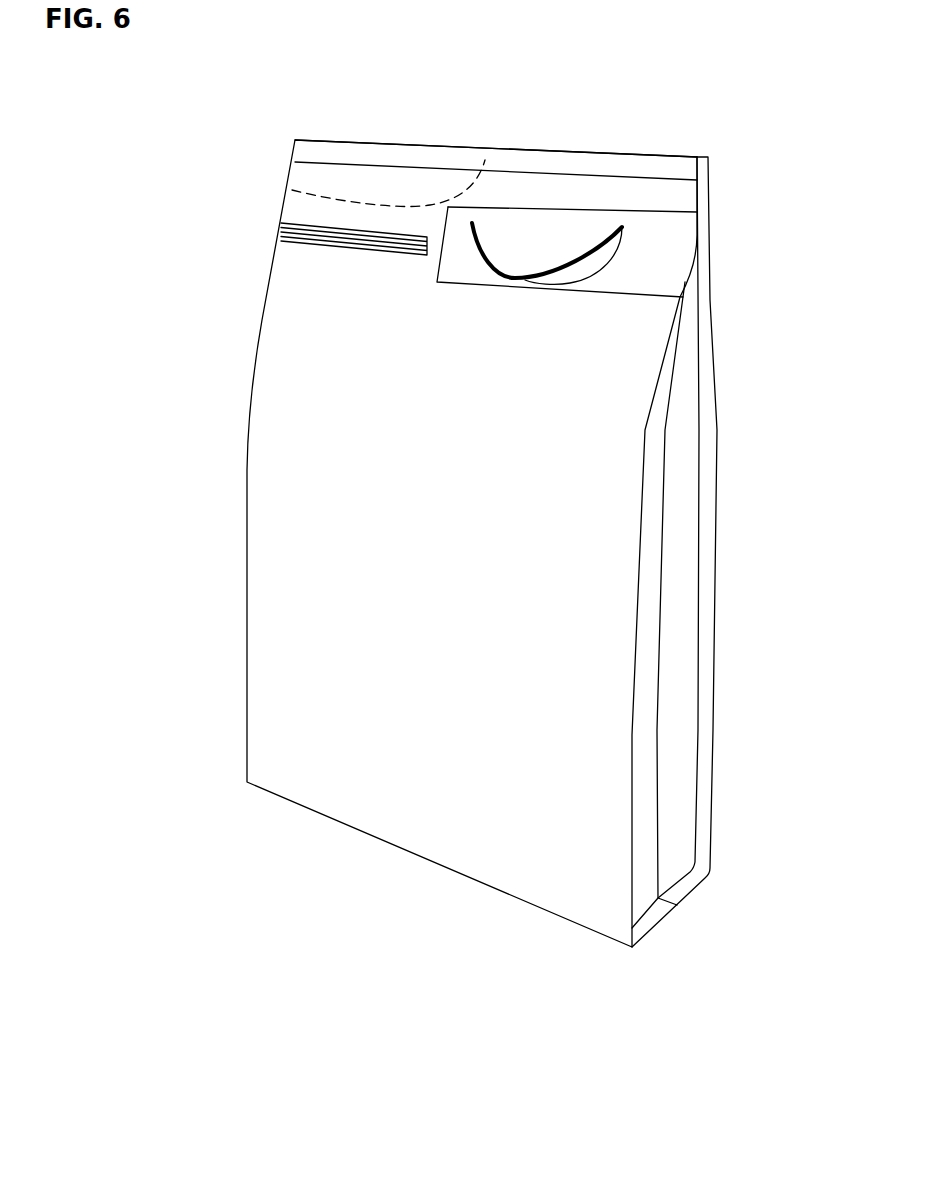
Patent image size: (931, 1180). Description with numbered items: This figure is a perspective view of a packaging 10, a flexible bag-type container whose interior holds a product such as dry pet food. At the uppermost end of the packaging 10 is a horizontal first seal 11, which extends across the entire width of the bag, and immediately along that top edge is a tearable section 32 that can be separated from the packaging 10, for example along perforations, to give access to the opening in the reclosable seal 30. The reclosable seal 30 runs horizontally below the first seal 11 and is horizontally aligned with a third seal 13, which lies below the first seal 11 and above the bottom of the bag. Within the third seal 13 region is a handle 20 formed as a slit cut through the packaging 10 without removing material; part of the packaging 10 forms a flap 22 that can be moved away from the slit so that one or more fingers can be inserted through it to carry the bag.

The packaging 10 is at (128, 585).
The first seal 11 is at (684, 169).
The third seal 13 is at (673, 245).
The handle 20 is at (602, 276).
The flap 22 is at (534, 233).
The reclosable seal 30 is at (331, 268).
The tearable section 32 is at (358, 143).